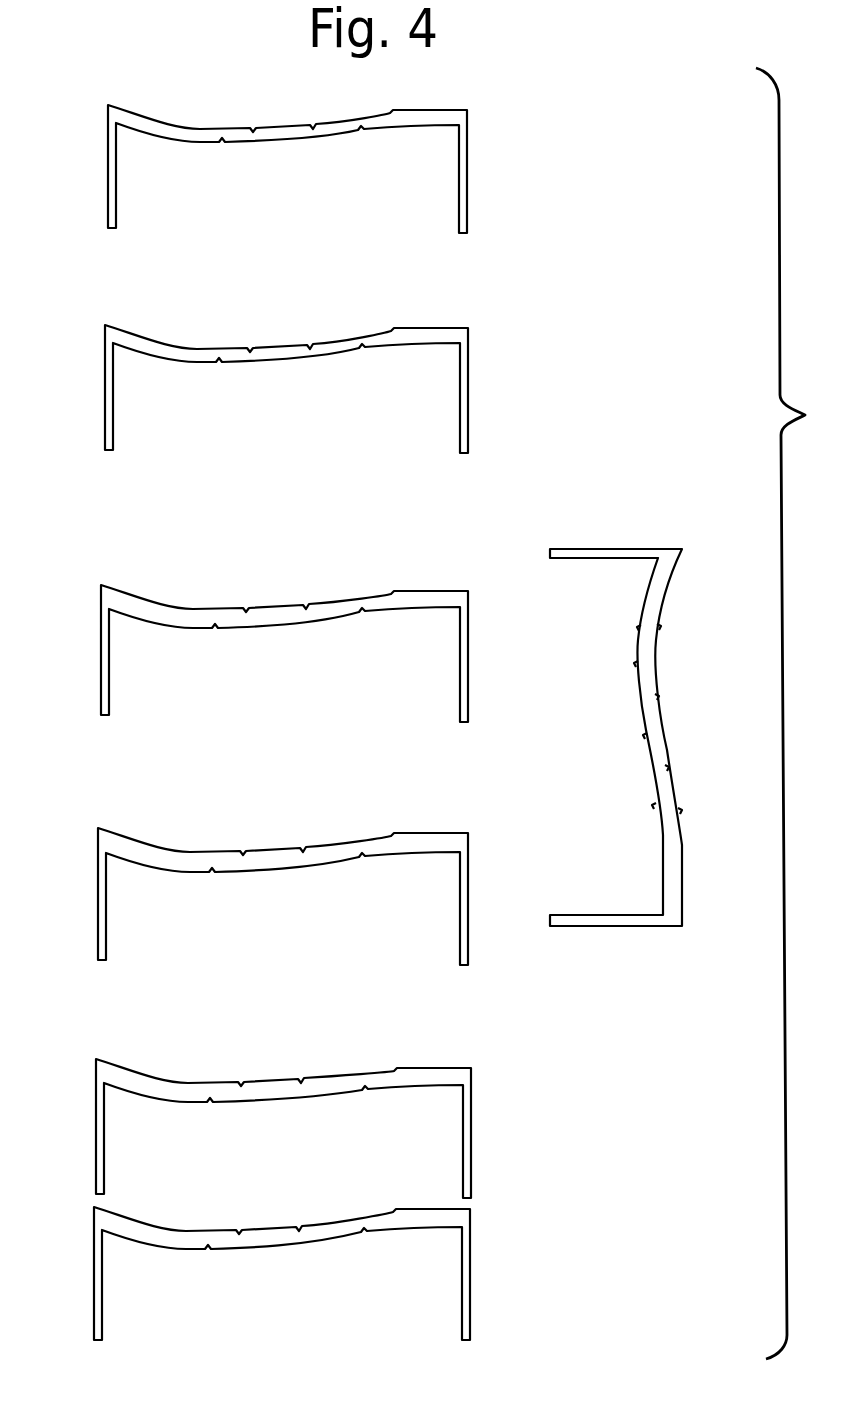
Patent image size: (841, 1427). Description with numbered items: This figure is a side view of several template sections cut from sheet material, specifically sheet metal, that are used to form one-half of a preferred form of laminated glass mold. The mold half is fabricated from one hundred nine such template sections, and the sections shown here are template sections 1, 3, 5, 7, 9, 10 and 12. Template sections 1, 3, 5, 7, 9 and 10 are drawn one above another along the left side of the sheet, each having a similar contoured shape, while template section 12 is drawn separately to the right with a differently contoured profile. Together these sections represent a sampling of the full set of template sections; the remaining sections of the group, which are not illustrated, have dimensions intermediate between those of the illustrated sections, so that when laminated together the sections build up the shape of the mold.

The template section 1 is at (108, 140).
The template section 3 is at (105, 348).
The template section 5 is at (101, 620).
The template section 7 is at (98, 858).
The template section 9 is at (96, 1090).
The template section 10 is at (94, 1243).
The template section 12 is at (645, 549).